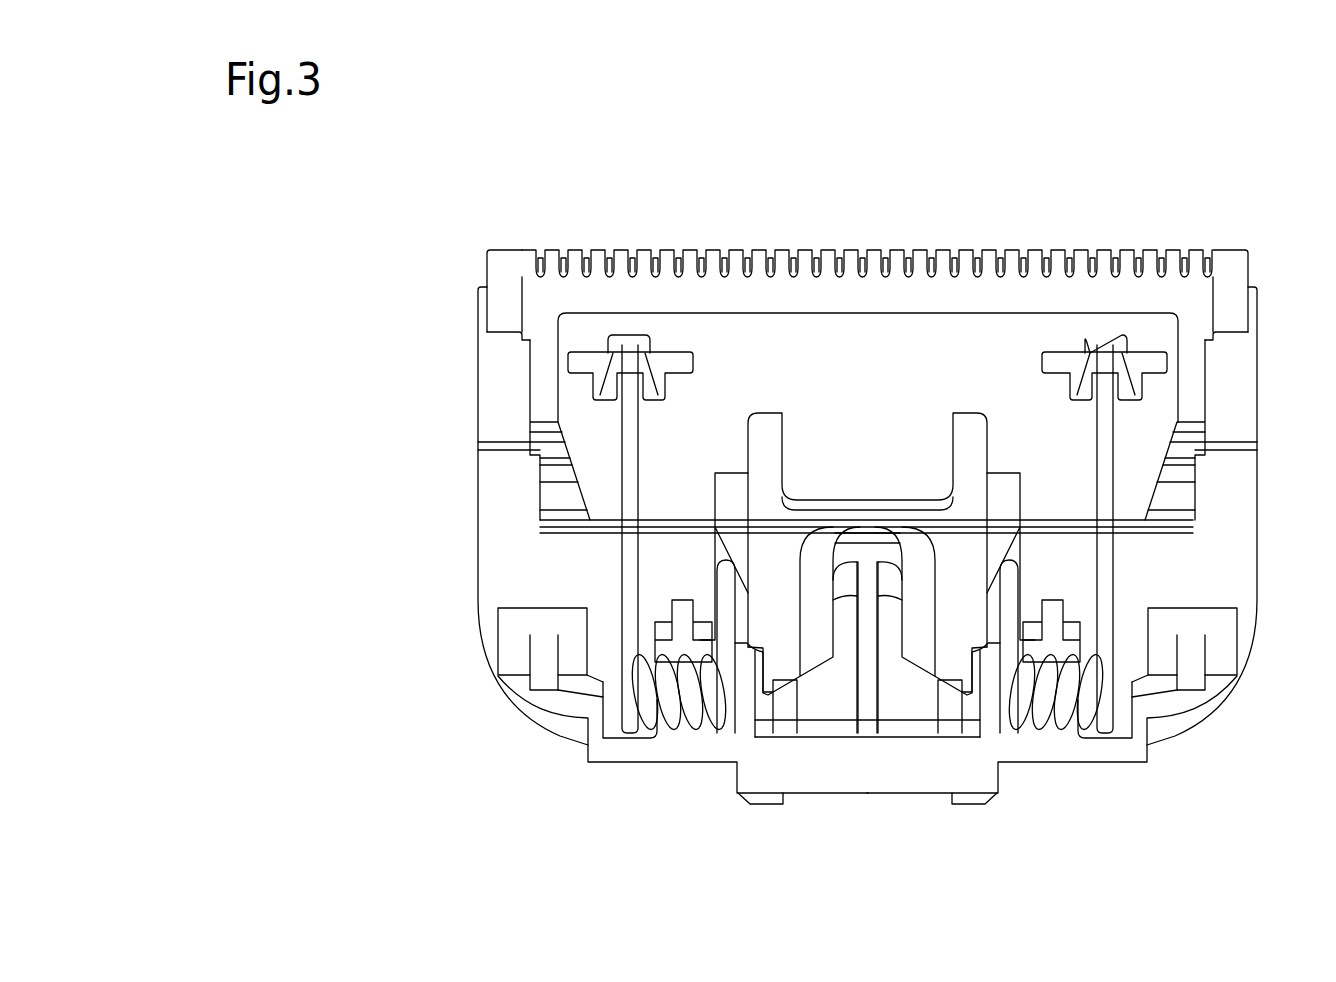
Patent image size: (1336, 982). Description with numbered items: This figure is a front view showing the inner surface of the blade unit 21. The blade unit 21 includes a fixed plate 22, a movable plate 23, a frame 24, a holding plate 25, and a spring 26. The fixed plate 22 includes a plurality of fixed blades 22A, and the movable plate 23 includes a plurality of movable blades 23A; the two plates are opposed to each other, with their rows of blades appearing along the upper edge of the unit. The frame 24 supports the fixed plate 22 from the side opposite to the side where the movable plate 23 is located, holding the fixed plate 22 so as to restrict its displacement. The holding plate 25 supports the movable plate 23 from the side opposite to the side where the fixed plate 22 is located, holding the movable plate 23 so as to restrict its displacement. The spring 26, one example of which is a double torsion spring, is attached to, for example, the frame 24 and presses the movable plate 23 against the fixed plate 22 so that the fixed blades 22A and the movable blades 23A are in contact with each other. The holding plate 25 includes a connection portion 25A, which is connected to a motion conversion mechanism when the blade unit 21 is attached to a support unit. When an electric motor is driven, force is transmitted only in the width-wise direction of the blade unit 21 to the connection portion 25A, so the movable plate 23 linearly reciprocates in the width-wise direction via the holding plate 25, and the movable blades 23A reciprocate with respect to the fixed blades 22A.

The blade unit 21 is at (1249, 215).
The fixed plate 22 is at (1233, 310).
The fixed blades 22A is at (1153, 247).
The movable plate 23 is at (528, 282).
The movable blades 23A is at (565, 226).
The frame 24 is at (1258, 368).
The holding plate 25 is at (568, 392).
The connection portion 25A is at (968, 607).
The spring 26 is at (1113, 593).